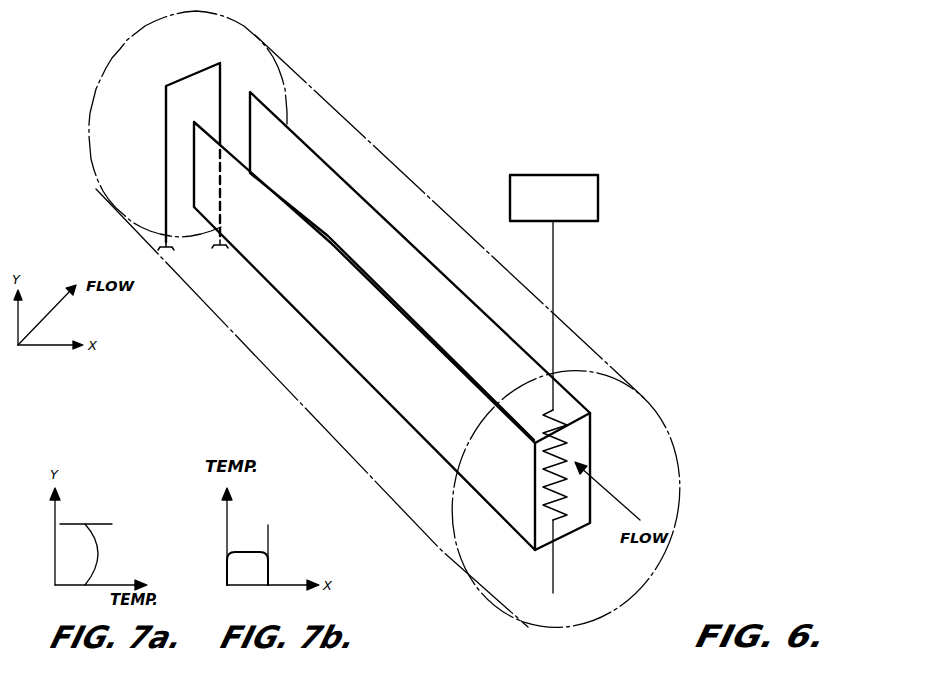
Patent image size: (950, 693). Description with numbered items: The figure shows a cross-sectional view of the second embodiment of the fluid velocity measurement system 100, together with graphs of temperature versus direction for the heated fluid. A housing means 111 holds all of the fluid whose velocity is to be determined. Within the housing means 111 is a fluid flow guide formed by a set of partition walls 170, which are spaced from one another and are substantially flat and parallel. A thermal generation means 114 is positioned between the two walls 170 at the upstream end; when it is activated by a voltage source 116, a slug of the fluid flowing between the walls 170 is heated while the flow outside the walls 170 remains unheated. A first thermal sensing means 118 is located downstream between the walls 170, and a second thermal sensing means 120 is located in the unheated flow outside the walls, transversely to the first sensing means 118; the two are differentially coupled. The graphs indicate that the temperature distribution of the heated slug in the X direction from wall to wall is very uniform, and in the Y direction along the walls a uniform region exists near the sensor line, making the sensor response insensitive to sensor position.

In FIG. 6, the fluid velocity measurement system 100 is at (400, 150).
In FIG. 6, the housing means 111 is at (583, 340).
In FIG. 6, the thermal generation means 114 is at (575, 445).
In FIG. 6, the voltage source 116 is at (598, 172).
In FIG. 6, the first thermal sensing means 118 is at (212, 128).
In FIG. 6, the second thermal sensing means 120 is at (160, 154).
In FIG. 6, the partition walls 170 is at (336, 252).
In FIG. 7b, the partition walls 170 is at (227, 531).